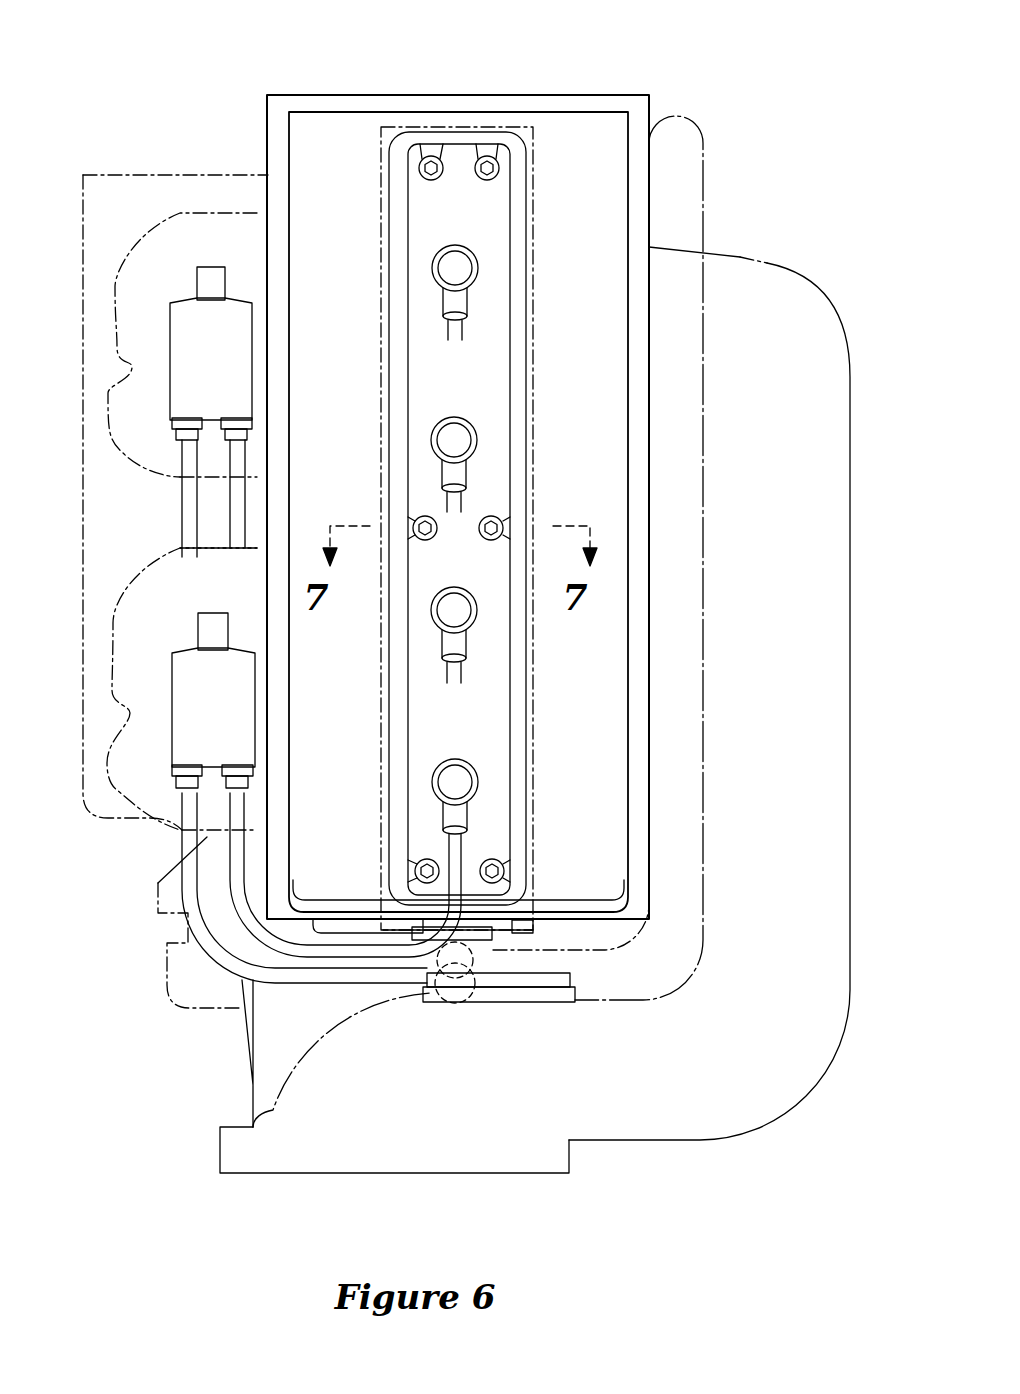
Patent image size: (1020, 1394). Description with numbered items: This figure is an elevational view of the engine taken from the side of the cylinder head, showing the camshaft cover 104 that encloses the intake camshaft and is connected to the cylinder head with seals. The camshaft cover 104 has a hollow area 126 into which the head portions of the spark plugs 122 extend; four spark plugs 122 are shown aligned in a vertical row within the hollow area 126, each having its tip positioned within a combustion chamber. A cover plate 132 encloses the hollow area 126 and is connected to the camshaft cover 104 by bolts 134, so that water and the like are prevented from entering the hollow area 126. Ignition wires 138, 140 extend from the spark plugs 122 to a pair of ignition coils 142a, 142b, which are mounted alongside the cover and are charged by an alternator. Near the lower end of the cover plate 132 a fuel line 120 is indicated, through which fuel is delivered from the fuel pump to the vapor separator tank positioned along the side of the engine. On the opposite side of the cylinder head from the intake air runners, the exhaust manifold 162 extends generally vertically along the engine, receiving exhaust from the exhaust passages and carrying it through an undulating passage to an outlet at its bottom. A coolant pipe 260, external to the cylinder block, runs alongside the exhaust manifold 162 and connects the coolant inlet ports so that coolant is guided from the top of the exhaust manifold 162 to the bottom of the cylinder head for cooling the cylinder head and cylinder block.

The camshaft cover 104 is at (481, 95).
The fuel line 120 is at (415, 866).
The spark plug 122 is at (455, 262).
The hollow area 126 is at (505, 262).
The cover plate 132 is at (533, 200).
The bolts 134 is at (417, 165).
The ignition wire 138 is at (188, 913).
The ignition wire 140 is at (238, 878).
The ignition coil 142a is at (242, 698).
The ignition coil 142b is at (238, 370).
The exhaust manifold 162 is at (767, 292).
The coolant pipe 260 is at (680, 398).